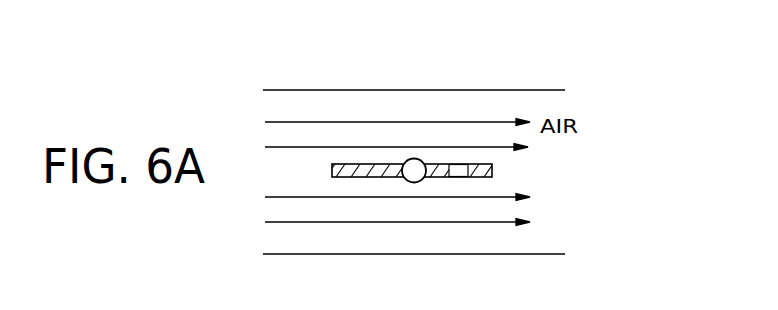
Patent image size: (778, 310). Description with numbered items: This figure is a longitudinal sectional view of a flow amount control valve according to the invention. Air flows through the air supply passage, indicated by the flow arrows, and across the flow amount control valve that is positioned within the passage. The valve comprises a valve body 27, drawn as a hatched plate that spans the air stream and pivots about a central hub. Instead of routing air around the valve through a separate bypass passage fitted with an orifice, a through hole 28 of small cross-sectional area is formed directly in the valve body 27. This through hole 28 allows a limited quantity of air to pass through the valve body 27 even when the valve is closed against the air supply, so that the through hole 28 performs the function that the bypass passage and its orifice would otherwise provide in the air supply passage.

The valve body 27 is at (492, 170).
The through hole 28 is at (458, 165).